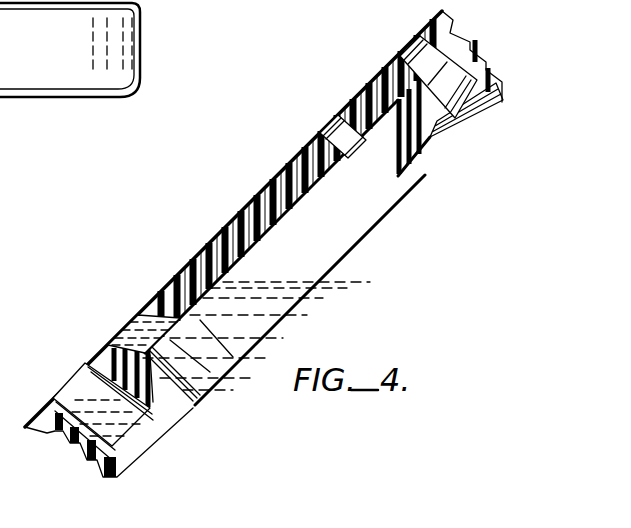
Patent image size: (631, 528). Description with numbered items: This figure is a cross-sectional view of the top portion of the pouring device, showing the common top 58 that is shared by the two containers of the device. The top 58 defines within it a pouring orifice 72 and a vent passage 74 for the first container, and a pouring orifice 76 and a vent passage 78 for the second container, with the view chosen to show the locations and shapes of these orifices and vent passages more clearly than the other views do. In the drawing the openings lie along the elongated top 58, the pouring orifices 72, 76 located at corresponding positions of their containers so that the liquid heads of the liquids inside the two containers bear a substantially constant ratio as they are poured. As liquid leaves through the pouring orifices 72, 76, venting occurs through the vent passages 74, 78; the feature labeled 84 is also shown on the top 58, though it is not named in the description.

The top 58 is at (248, 213).
The pouring orifice 72 is at (118, 334).
The vent passage 74 is at (343, 123).
The pouring orifice 76 is at (90, 387).
The vent passage 78 is at (420, 55).
The lip 84 is at (193, 419).